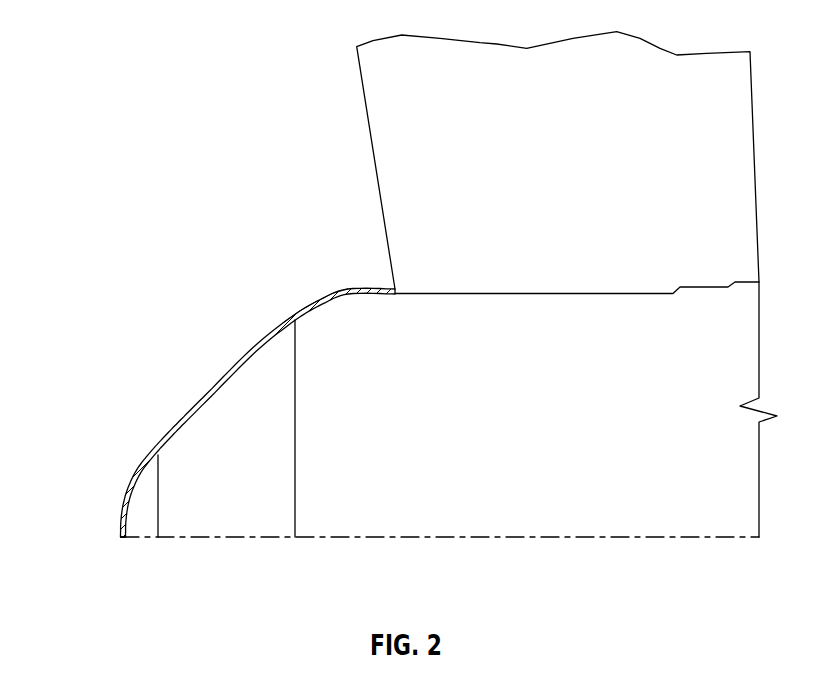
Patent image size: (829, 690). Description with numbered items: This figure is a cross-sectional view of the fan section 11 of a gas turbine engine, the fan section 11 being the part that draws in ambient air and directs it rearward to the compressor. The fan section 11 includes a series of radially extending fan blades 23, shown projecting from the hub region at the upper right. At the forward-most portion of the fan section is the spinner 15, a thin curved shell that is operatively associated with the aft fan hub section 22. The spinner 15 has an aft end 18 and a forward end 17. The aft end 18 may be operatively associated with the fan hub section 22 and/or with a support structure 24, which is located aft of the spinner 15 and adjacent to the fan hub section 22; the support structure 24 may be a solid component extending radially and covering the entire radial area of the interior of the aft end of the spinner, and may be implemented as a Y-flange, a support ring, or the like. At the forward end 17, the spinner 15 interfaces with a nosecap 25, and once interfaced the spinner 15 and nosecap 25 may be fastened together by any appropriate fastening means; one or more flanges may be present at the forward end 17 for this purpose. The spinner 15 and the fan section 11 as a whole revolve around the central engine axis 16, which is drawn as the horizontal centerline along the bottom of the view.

The fan section 11 is at (218, 68).
The spinner 15 is at (196, 389).
The central engine axis 16 is at (601, 548).
The forward end 17 is at (156, 448).
The aft end 18 is at (283, 322).
The aft fan hub section 22 is at (457, 431).
The fan blades 23 is at (710, 69).
The support structure 24 is at (306, 397).
The nosecap 25 is at (112, 525).